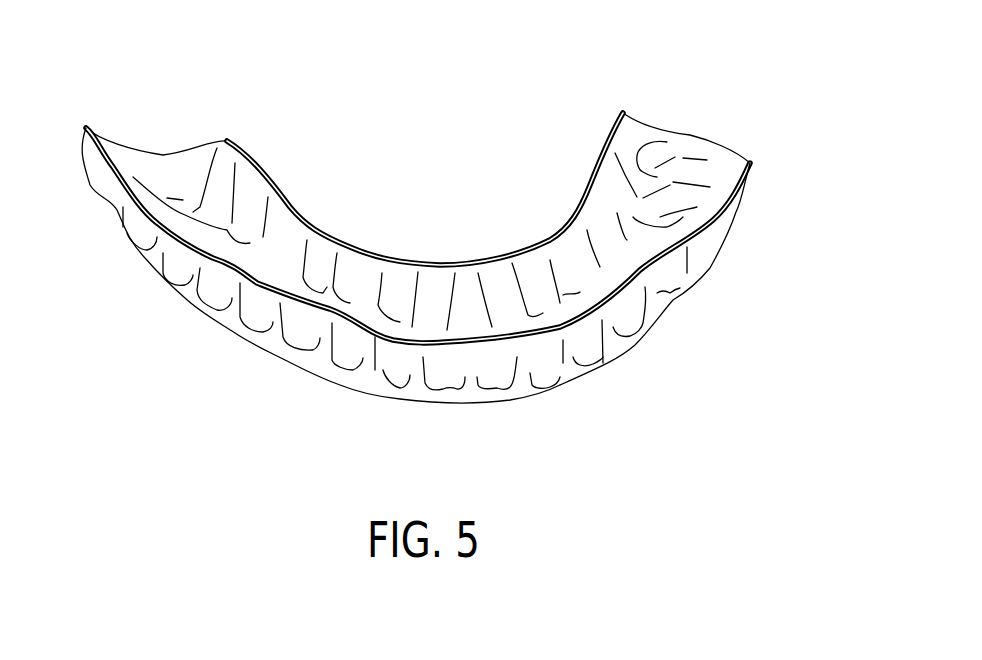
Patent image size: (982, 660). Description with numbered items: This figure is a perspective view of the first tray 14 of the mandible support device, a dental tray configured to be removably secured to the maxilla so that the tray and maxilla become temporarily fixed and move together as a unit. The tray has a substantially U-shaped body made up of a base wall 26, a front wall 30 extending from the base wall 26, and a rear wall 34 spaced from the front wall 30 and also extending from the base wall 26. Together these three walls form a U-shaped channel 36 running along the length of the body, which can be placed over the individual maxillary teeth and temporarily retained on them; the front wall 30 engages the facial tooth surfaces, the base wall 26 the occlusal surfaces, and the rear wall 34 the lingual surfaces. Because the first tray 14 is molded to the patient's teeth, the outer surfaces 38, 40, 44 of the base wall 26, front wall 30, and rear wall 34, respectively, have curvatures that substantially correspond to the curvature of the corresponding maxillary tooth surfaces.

The first tray 14 is at (416, 265).
The base wall 26 is at (672, 187).
The front wall 30 is at (603, 364).
The rear wall 34 is at (440, 273).
The channel 36 is at (273, 250).
The outer surface of base wall 38 is at (386, 408).
The outer surface of front wall 40 is at (688, 293).
The outer surface of rear wall 44 is at (548, 233).